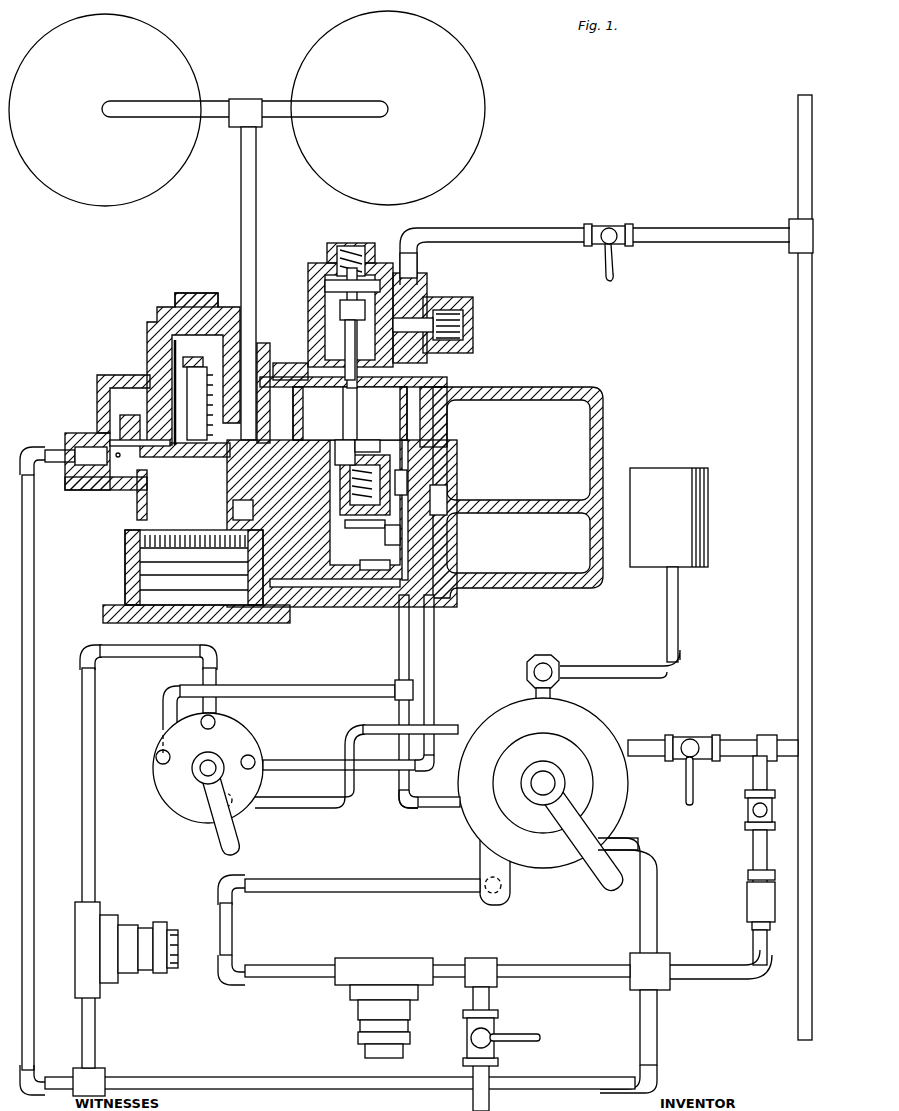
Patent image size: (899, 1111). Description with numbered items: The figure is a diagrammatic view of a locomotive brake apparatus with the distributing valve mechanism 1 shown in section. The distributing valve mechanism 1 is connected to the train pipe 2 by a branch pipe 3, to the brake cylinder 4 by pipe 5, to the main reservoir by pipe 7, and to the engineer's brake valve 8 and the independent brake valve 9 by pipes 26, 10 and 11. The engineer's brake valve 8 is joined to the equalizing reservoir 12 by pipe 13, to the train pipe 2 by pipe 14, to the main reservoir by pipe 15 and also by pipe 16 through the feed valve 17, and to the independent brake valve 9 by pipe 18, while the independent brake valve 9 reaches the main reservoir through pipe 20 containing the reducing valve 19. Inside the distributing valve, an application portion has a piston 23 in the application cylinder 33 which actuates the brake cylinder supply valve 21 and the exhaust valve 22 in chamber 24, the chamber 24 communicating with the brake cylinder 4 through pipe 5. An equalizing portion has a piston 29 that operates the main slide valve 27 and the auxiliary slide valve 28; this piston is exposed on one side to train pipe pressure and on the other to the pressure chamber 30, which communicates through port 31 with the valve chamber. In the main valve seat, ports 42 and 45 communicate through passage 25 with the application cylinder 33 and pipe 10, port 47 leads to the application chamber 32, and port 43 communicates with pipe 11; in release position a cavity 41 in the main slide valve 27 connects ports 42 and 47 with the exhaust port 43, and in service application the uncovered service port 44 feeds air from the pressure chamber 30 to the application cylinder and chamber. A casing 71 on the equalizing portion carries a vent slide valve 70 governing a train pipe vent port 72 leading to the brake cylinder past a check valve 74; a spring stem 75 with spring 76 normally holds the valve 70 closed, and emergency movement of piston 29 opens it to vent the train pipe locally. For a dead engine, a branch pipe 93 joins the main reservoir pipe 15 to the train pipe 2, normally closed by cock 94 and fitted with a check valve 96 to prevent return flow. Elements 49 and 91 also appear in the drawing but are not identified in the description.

The distributing valve mechanism 1 is at (160, 336).
The train pipe 2 is at (798, 556).
The branch pipe 3 is at (562, 230).
The brake cylinder 4 is at (285, 84).
The pipe 5 is at (241, 213).
The pipe 7 is at (36, 600).
The engineer's brake valve 8 is at (512, 712).
The independent brake valve 9 is at (163, 772).
The pipe 10 is at (400, 645).
The pipe 11 is at (434, 640).
The equalizing reservoir 12 is at (708, 560).
The pipe 13 is at (646, 672).
The pipe 14 is at (713, 747).
The pipe 15 is at (642, 933).
The pipe 16 is at (388, 882).
The feed valve 17 is at (380, 985).
The pipe 18 is at (345, 745).
The reducing valve 19 is at (80, 935).
The pipe 20 is at (82, 770).
The application valve 21 is at (130, 440).
The exhaust valve 22 is at (243, 507).
The piston 23 is at (226, 605).
The chamber 24 is at (198, 300).
The passage 25 is at (322, 585).
The pipe 26 is at (405, 800).
The main slide valve 27 is at (380, 540).
The auxiliary slide valve 28 is at (348, 489).
The equalizing piston 29 is at (338, 422).
The pressure chamber 30 is at (518, 475).
The port 31 is at (447, 428).
The application chamber 32 is at (540, 572).
The application cylinder 33 is at (126, 590).
The cavity 41 is at (360, 522).
The port 42 is at (375, 568).
The exhaust port 43 is at (401, 475).
The service port 44 is at (389, 528).
The port 45 is at (345, 454).
The port 47 is at (436, 498).
The port 49 is at (364, 436).
The slide valve 70 is at (362, 320).
The casing 71 is at (318, 292).
The train pipe vent port 72 is at (372, 322).
The check valve 74 is at (440, 320).
The spring stem 75 is at (350, 358).
The spring 76 is at (346, 248).
The valve 91 is at (690, 740).
The branch pipe 93 is at (707, 965).
The cock 94 is at (752, 812).
The check valve 96 is at (750, 892).